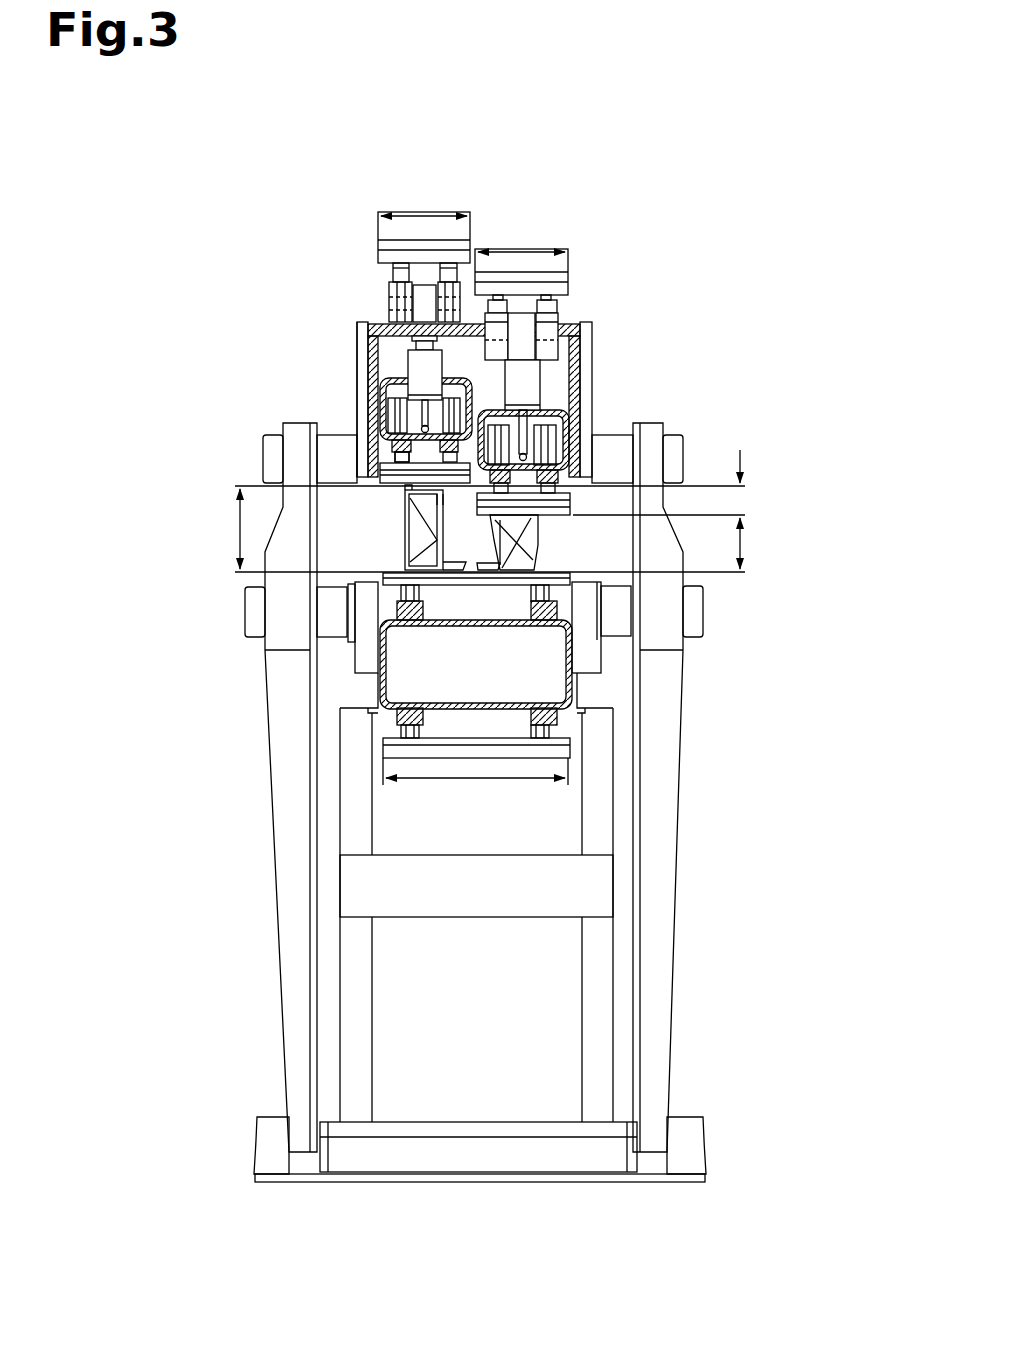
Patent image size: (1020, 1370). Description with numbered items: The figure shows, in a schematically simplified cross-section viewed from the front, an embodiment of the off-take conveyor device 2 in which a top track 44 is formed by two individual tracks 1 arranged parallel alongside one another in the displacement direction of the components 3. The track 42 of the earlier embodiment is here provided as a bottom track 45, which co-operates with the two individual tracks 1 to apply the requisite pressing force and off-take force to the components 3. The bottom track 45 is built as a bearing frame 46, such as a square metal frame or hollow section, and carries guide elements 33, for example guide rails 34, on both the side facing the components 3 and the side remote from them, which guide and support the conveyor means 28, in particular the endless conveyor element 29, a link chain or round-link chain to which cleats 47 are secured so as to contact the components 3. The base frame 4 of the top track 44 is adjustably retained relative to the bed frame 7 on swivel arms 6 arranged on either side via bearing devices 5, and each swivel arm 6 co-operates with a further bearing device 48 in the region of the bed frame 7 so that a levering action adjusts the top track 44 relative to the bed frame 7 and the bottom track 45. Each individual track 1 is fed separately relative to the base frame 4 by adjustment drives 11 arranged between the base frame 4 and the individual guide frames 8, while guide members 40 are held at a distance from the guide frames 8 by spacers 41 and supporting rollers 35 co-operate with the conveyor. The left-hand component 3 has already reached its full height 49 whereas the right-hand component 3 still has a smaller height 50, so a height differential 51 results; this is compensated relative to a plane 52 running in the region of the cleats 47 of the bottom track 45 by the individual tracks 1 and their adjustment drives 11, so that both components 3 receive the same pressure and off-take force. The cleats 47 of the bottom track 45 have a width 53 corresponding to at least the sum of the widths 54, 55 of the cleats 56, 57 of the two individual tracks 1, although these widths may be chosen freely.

The individual track 1 is at (402, 190).
The off-take conveyor device 2 is at (710, 300).
The component 3 is at (408, 540).
The base frame 4 is at (548, 378).
The bearing device 5 is at (255, 462).
The swivel arm 6 is at (662, 697).
The bed frame 7 is at (598, 1020).
The guide frame 8 is at (400, 385).
The adjustment drive 11 is at (580, 342).
The conveyor means 28 is at (400, 272).
The conveyor element 29 is at (445, 265).
The guide element 33 is at (425, 432).
The guide rail 34 is at (436, 952).
The supporting roller 35 is at (375, 440).
The guide member 40 is at (395, 290).
The spacer 41 is at (523, 313).
The track 42 is at (365, 697).
The top track 44 is at (300, 195).
The bottom track 45 is at (605, 685).
The bearing frame 46 is at (568, 656).
The cleat 47 is at (580, 578).
The bearing device 48 is at (232, 623).
The height 49 is at (238, 528).
The height 50 is at (745, 545).
The height differential 51 is at (745, 498).
The plane 52 is at (340, 568).
The width 53 is at (478, 780).
The width 54 is at (424, 216).
The width 55 is at (533, 250).
The cleat 56 is at (430, 247).
The cleat 57 is at (543, 278).